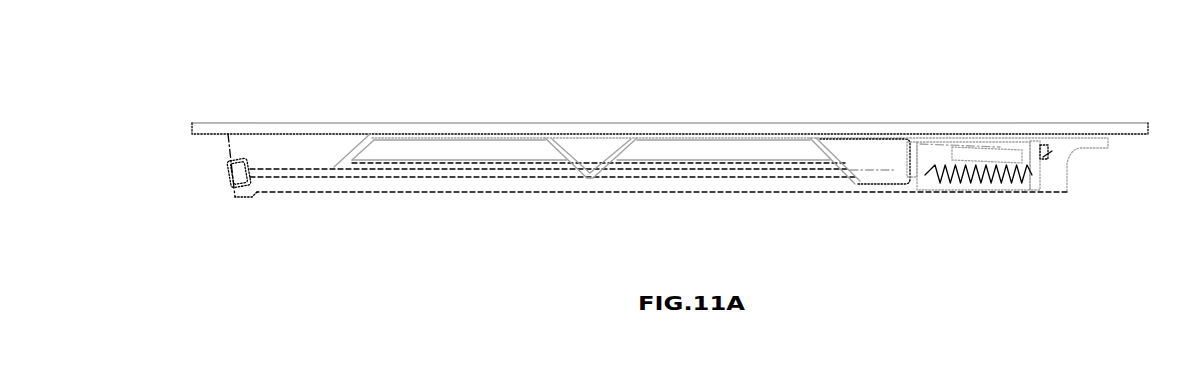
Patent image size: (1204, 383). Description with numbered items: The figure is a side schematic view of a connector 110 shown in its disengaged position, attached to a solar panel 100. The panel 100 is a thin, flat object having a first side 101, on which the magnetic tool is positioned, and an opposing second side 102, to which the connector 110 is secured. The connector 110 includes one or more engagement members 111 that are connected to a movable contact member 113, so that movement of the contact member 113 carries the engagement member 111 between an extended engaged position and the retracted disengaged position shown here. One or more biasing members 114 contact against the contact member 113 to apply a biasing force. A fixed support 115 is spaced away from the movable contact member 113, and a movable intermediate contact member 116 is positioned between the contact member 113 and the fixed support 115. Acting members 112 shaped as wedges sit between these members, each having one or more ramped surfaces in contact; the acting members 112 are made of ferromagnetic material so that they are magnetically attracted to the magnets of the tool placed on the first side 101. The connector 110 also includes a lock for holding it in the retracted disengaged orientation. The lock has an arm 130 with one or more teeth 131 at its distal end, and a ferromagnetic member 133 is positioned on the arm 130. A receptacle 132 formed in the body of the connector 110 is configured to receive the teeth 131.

The panel 100 is at (1123, 128).
The first side 101 is at (237, 123).
The second side 102 is at (212, 137).
The connector 110 is at (753, 202).
The engagement member 111 is at (287, 173).
The acting member 112 is at (457, 148).
The contact member 113 is at (860, 158).
The biasing member 114 is at (957, 178).
The fixed support 115 is at (337, 147).
The intermediate contact member 116 is at (590, 152).
The arm 130 is at (930, 142).
The teeth 131 is at (1043, 150).
The receptacle 132 is at (1045, 157).
The ferromagnetic member 133 is at (975, 150).